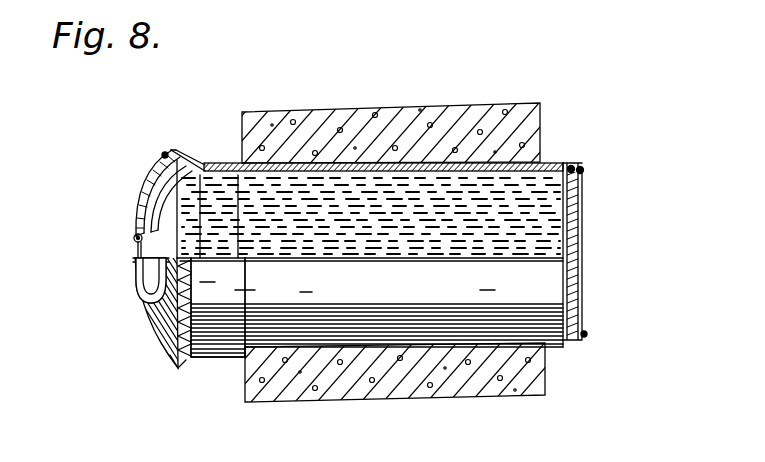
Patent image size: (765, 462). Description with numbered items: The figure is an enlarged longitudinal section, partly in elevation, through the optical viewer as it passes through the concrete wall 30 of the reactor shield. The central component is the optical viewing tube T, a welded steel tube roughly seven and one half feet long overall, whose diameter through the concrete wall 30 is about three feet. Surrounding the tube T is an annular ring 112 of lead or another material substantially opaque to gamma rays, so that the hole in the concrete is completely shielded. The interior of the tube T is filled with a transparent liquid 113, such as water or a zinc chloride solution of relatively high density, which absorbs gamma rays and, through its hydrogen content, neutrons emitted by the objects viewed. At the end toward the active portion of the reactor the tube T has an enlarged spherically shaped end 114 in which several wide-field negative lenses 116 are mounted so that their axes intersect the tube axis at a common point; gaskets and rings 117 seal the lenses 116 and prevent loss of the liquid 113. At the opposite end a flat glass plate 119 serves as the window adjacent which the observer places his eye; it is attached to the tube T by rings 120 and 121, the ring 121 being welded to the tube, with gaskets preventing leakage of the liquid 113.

The concrete wall 30 is at (302, 111).
The transparent liquid 113 is at (398, 177).
The annular ring 112 is at (222, 158).
The negative lenses 116 is at (140, 193).
The gaskets and rings 117 is at (134, 238).
The spherically shaped end 114 is at (166, 318).
The flat glass plate 119 is at (582, 222).
The knob 120 is at (584, 176).
The ring 121 is at (571, 163).
The optical viewing tube T is at (460, 322).